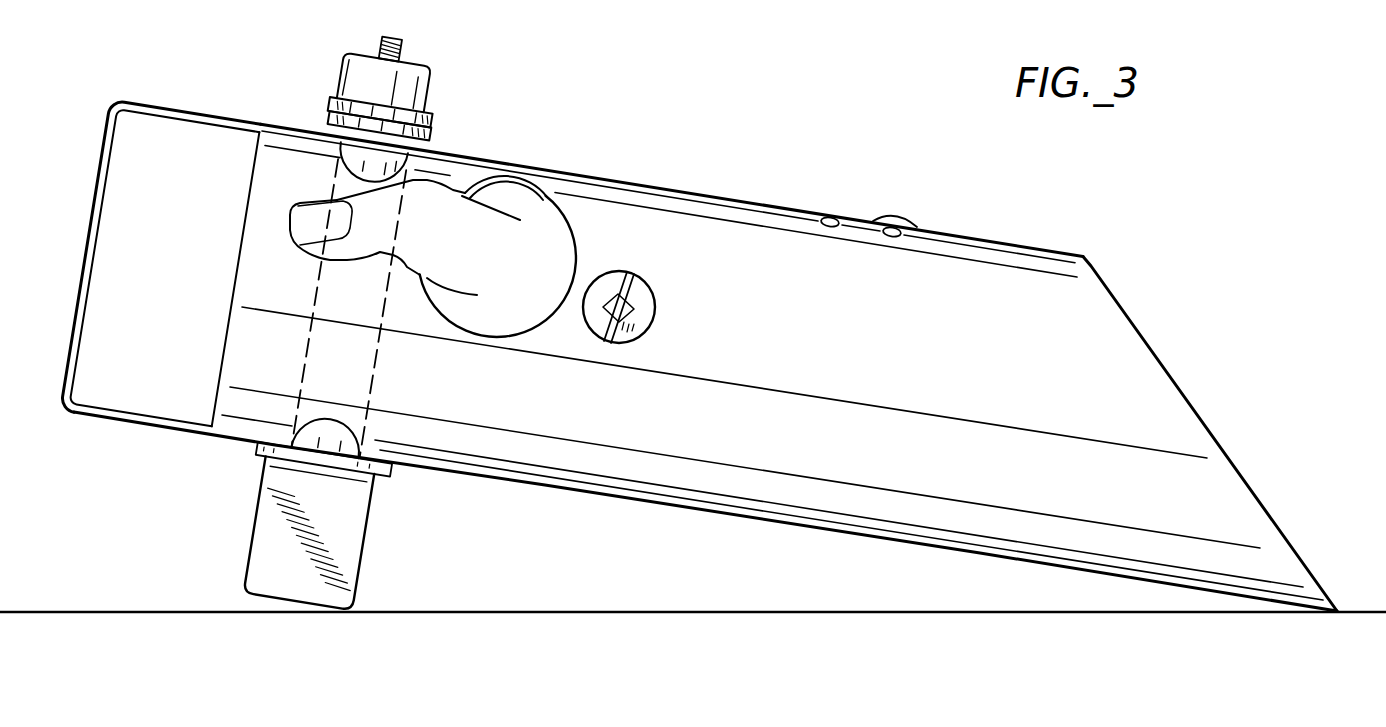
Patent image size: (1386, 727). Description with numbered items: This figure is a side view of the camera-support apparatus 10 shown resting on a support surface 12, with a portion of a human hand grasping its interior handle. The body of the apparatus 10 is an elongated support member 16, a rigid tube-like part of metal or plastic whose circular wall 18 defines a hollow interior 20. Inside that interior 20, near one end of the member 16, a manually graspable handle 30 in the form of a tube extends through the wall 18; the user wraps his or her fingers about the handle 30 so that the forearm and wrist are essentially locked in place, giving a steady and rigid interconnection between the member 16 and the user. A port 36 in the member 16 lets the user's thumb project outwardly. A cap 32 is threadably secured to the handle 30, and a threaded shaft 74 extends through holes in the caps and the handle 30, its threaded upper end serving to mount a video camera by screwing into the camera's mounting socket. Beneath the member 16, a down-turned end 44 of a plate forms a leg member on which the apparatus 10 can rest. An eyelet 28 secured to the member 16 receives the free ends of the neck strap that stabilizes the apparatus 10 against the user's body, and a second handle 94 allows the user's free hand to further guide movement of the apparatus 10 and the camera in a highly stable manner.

The apparatus 10 is at (652, 183).
The support surface 12 is at (455, 611).
The elongated support member 16 is at (800, 223).
The circular wall 18 is at (1122, 345).
The hollow interior 20 is at (535, 200).
The eyelet 28 is at (628, 272).
The manually graspable handle 30 is at (373, 383).
The cap 32 is at (342, 67).
The port 36 is at (570, 263).
The down-turned end 44 is at (358, 533).
The threaded shaft 74 is at (381, 43).
The second handle 94 is at (168, 100).